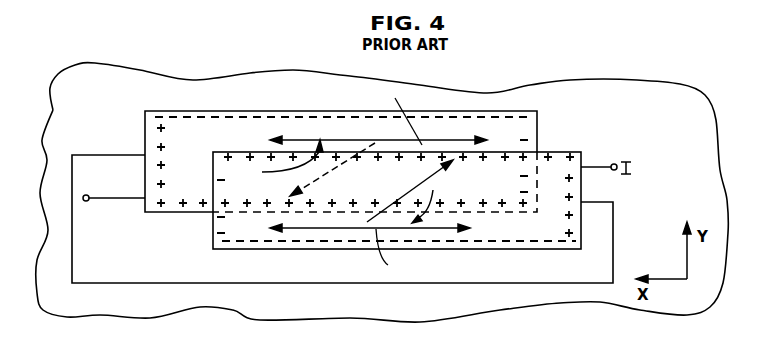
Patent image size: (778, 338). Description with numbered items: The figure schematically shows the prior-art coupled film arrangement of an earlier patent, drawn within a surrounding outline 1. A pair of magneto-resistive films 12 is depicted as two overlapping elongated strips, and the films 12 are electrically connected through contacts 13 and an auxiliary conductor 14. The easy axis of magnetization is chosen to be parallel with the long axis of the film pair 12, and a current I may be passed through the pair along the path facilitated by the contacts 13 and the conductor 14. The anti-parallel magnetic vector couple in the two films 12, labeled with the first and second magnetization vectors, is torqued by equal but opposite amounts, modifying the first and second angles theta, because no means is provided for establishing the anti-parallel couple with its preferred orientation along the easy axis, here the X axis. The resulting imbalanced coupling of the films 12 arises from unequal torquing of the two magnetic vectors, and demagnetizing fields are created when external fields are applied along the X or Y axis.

The substrate 1 is at (648, 90).
The magneto-resistive films 12 is at (537, 135).
The contacts 13 is at (118, 200).
The auxiliary conductor 14 is at (119, 156).